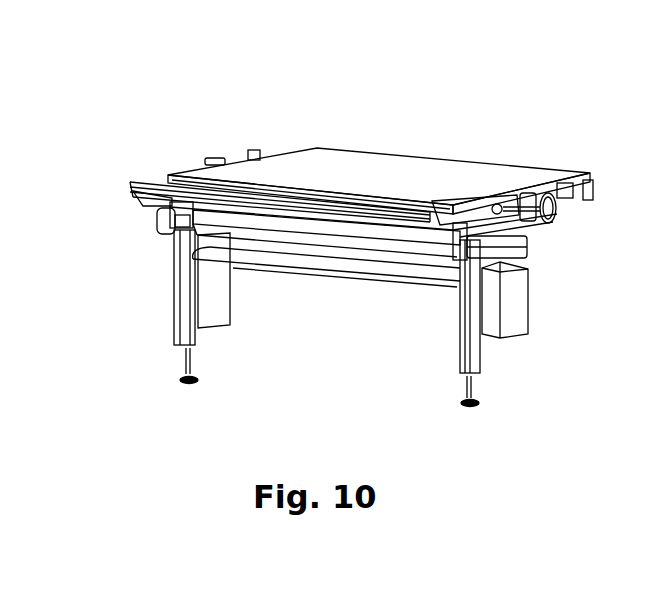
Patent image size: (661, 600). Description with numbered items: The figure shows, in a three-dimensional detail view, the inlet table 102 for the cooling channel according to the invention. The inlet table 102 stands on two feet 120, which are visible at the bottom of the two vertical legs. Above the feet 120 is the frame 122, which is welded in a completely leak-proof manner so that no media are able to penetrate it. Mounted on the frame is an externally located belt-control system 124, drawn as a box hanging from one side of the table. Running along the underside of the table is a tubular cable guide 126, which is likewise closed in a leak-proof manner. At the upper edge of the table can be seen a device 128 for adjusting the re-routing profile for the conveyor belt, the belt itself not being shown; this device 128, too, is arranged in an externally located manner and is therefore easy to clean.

The inlet table 102 is at (400, 162).
The device for adjusting the re-routing profile 128 is at (476, 225).
The belt-control system 124 is at (528, 253).
The tubular cable guide 126 is at (358, 263).
The frame 122 is at (199, 340).
The feet 120 is at (189, 386).